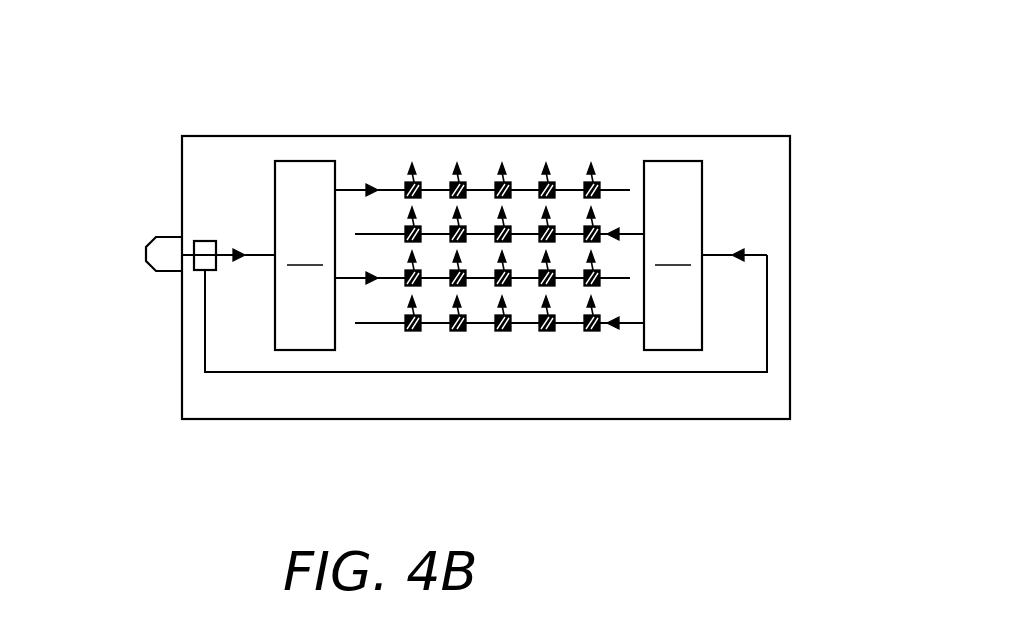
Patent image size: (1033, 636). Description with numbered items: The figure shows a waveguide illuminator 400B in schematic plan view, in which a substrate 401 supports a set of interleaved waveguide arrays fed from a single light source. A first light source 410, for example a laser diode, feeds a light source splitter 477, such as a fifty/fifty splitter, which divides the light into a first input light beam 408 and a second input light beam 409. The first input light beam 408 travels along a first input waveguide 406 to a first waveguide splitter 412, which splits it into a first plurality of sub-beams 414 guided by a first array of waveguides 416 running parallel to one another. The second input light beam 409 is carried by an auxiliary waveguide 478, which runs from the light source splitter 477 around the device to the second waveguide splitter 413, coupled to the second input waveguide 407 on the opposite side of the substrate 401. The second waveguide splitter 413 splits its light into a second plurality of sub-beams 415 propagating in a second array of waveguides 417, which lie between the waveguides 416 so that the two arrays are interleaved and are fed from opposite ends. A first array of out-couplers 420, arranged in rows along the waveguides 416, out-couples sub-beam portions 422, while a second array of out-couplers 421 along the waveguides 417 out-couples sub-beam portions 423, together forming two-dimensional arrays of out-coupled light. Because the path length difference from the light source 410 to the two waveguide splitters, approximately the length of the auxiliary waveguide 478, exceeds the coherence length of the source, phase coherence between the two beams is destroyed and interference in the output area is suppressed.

The waveguide illuminator 400B is at (550, 69).
The substrate 401 is at (190, 404).
The first input waveguide 406 is at (258, 257).
The second input waveguide 407 is at (719, 254).
The first input light beam 408 is at (233, 262).
The second input light beam 409 is at (739, 260).
The first light source 410 is at (160, 258).
The first waveguide splitter 412 is at (305, 255).
The second waveguide splitter 413 is at (673, 255).
The first plurality of sub-beams 414 is at (347, 278).
The second plurality of sub-beams 415 is at (626, 324).
The first array of waveguides 416 is at (384, 190).
The second array of waveguides 417 is at (383, 323).
The first array of out-couplers 420 is at (422, 183).
The second array of out-couplers 421 is at (459, 331).
The out-coupled sub-beam portions 422 is at (502, 165).
The out-coupled sub-beam portions 423 is at (596, 208).
The light source splitter 477 is at (208, 241).
The auxiliary waveguide 478 is at (675, 372).